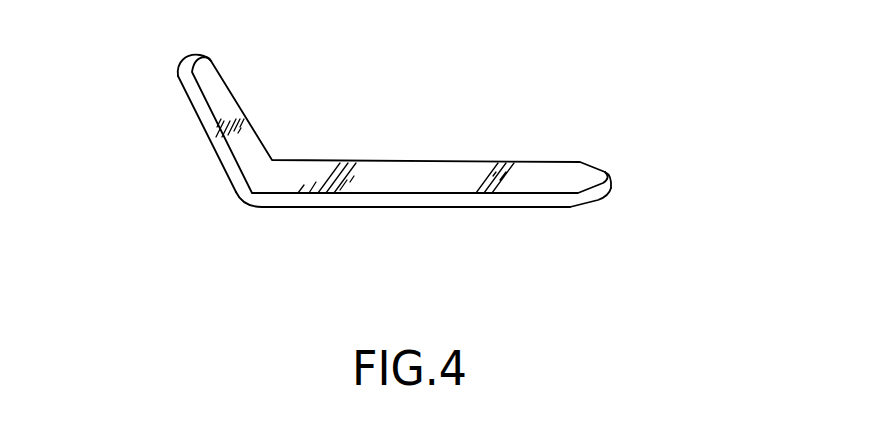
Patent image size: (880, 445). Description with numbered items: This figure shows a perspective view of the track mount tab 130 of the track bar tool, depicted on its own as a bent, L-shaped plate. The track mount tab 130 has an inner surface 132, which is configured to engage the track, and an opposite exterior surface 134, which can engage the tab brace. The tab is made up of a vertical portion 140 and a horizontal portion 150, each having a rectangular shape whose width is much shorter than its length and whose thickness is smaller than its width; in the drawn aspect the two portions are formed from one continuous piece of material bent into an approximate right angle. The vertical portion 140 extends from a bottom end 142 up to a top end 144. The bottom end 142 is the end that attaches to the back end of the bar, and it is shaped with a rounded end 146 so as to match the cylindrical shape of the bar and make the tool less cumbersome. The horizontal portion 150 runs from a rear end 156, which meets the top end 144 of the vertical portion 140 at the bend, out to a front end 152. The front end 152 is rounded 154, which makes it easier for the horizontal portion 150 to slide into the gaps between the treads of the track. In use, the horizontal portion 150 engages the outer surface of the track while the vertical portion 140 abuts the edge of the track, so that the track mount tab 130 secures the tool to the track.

The track mount tab 130 is at (497, 106).
The inner surface 132 is at (403, 144).
The exterior surface 134 is at (586, 226).
The vertical portion 140 is at (188, 137).
The bottom end 142 is at (244, 59).
The top end 144 is at (228, 216).
The rounded end 146 is at (155, 54).
The horizontal portion 150 is at (451, 216).
The front end 152 is at (573, 144).
The rounded front end 154 is at (645, 184).
The rear end 156 is at (318, 241).